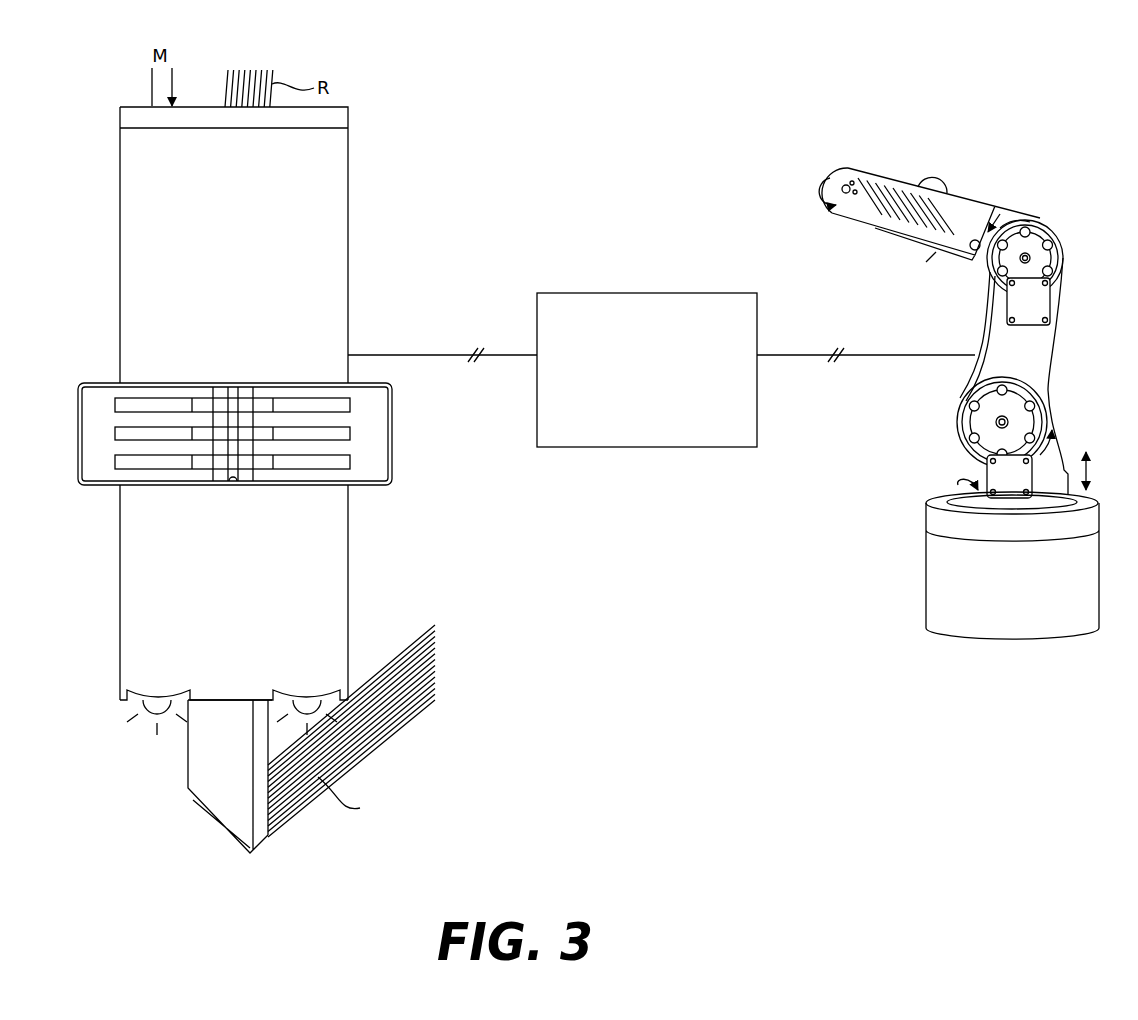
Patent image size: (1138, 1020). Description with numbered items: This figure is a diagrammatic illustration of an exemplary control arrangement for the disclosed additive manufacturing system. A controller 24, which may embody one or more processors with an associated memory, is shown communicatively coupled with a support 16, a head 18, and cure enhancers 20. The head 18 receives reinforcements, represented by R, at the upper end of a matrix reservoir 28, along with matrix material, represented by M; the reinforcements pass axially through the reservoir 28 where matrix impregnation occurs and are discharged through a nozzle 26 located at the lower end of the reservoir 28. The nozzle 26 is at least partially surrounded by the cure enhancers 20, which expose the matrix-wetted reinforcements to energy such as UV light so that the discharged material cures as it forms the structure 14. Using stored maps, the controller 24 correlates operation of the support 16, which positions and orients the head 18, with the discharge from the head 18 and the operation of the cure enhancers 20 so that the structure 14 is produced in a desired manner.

The structure 14 is at (352, 731).
The support 16 is at (972, 403).
The head 18 is at (283, 480).
The cure enhancer 20 is at (212, 710).
The controller 24 is at (661, 370).
The nozzle 26 is at (183, 776).
The matrix reservoir 28 is at (234, 662).